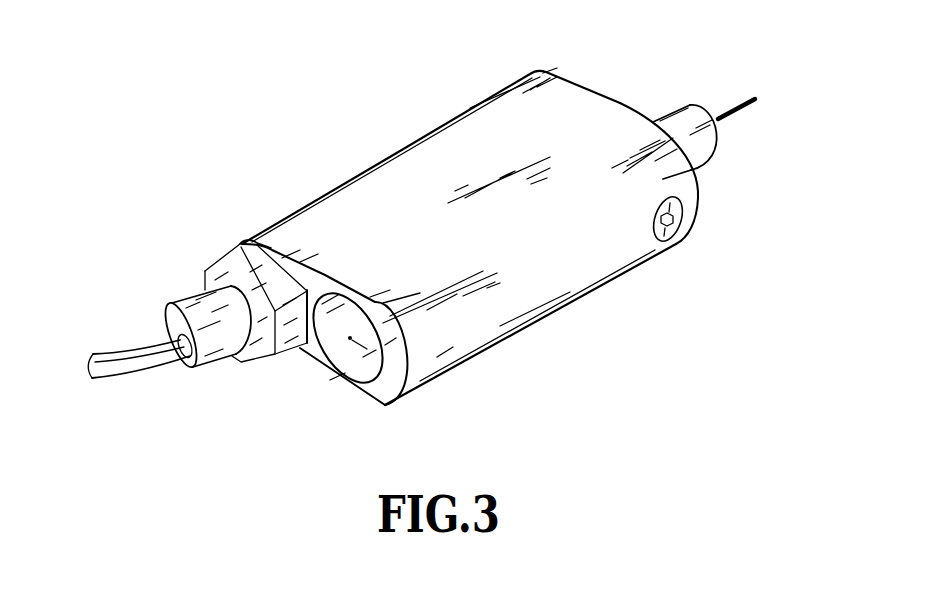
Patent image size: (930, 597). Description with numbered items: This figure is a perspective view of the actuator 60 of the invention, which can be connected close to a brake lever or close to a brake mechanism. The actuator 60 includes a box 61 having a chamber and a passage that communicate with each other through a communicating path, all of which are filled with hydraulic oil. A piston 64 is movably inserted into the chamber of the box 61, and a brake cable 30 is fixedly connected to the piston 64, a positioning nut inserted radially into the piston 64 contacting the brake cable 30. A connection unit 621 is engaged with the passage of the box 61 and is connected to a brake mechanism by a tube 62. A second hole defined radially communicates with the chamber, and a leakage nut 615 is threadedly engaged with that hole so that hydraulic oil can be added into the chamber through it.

The actuator 60 is at (313, 163).
The box 61 is at (403, 168).
The leakage nut 615 is at (670, 238).
The piston 64 is at (349, 341).
The brake cable 30 is at (718, 114).
The connection unit 621 is at (207, 300).
The tube 62 is at (127, 367).